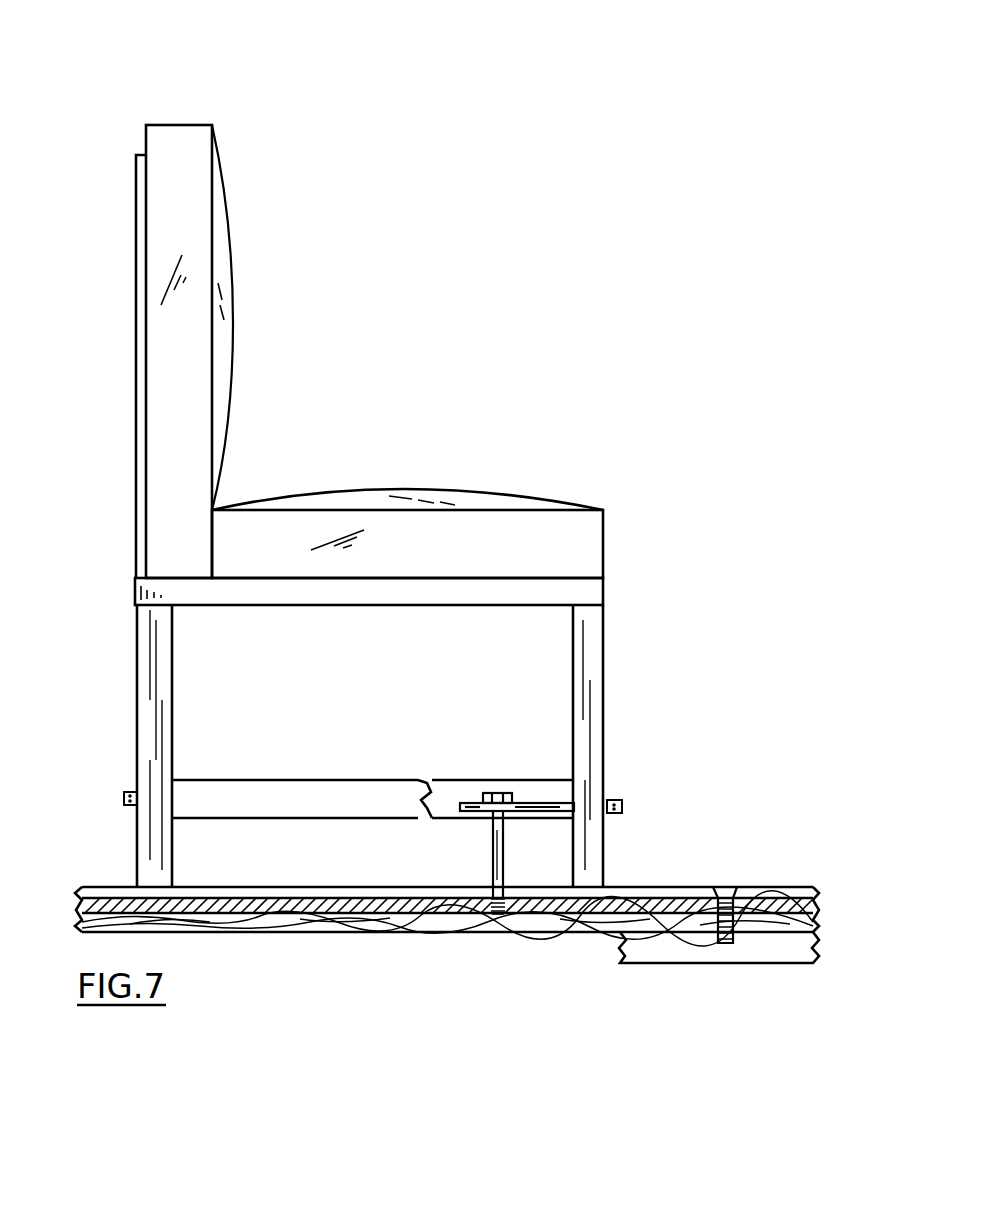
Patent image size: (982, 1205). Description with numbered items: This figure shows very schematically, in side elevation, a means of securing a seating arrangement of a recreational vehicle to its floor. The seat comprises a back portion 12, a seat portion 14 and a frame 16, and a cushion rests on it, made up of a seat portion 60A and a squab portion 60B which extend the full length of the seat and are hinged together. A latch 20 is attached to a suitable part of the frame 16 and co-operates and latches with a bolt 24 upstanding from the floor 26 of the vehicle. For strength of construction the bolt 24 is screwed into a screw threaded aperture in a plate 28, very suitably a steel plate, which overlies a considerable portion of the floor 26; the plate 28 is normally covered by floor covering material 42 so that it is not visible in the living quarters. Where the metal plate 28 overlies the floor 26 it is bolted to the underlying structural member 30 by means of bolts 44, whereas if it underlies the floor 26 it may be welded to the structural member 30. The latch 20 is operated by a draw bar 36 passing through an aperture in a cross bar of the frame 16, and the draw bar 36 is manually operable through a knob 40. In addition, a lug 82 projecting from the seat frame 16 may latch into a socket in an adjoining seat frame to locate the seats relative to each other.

The back portion 12 is at (148, 218).
The squab portion 60B is at (221, 340).
The seat portion of cushion 60A is at (423, 490).
The seat portion 14 is at (448, 575).
The frame 16 is at (595, 661).
The latch 20 is at (530, 800).
The bolt 24 is at (497, 793).
The draw bar 36 is at (543, 811).
The lug 82 is at (122, 804).
The knob 40 is at (625, 803).
The floor covering material 42 is at (335, 888).
The plate 28 is at (352, 908).
The floor 26 is at (424, 920).
The structural member 30 is at (692, 958).
The bolt 44 is at (740, 875).